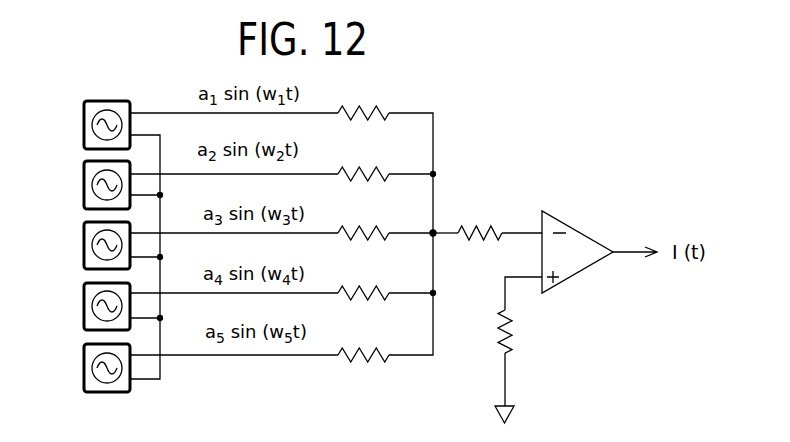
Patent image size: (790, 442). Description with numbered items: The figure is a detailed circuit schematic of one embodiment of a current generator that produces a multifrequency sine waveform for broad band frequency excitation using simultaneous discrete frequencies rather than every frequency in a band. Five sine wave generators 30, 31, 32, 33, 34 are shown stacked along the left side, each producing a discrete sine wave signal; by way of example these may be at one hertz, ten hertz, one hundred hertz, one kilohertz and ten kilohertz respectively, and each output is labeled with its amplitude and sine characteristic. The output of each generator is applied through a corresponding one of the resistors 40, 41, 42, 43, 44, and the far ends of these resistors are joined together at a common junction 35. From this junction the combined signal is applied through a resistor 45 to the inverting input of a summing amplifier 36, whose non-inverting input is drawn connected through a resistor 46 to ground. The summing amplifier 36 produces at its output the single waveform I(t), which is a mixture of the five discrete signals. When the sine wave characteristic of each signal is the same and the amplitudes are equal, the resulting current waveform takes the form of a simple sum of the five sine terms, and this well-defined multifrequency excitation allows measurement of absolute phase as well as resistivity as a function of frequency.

The sine wave generator 30 is at (93, 120).
The sine wave generator 31 is at (93, 180).
The sine wave generator 32 is at (93, 242).
The sine wave generator 33 is at (93, 303).
The sine wave generator 34 is at (93, 364).
The resistor 40 is at (379, 112).
The resistor 41 is at (379, 172).
The resistor 42 is at (380, 233).
The resistor 43 is at (380, 293).
The resistor 44 is at (380, 356).
The summing node 35 is at (437, 229).
The resistor 45 is at (494, 228).
The summing amplifier 36 is at (566, 225).
The resistor 46 is at (512, 330).